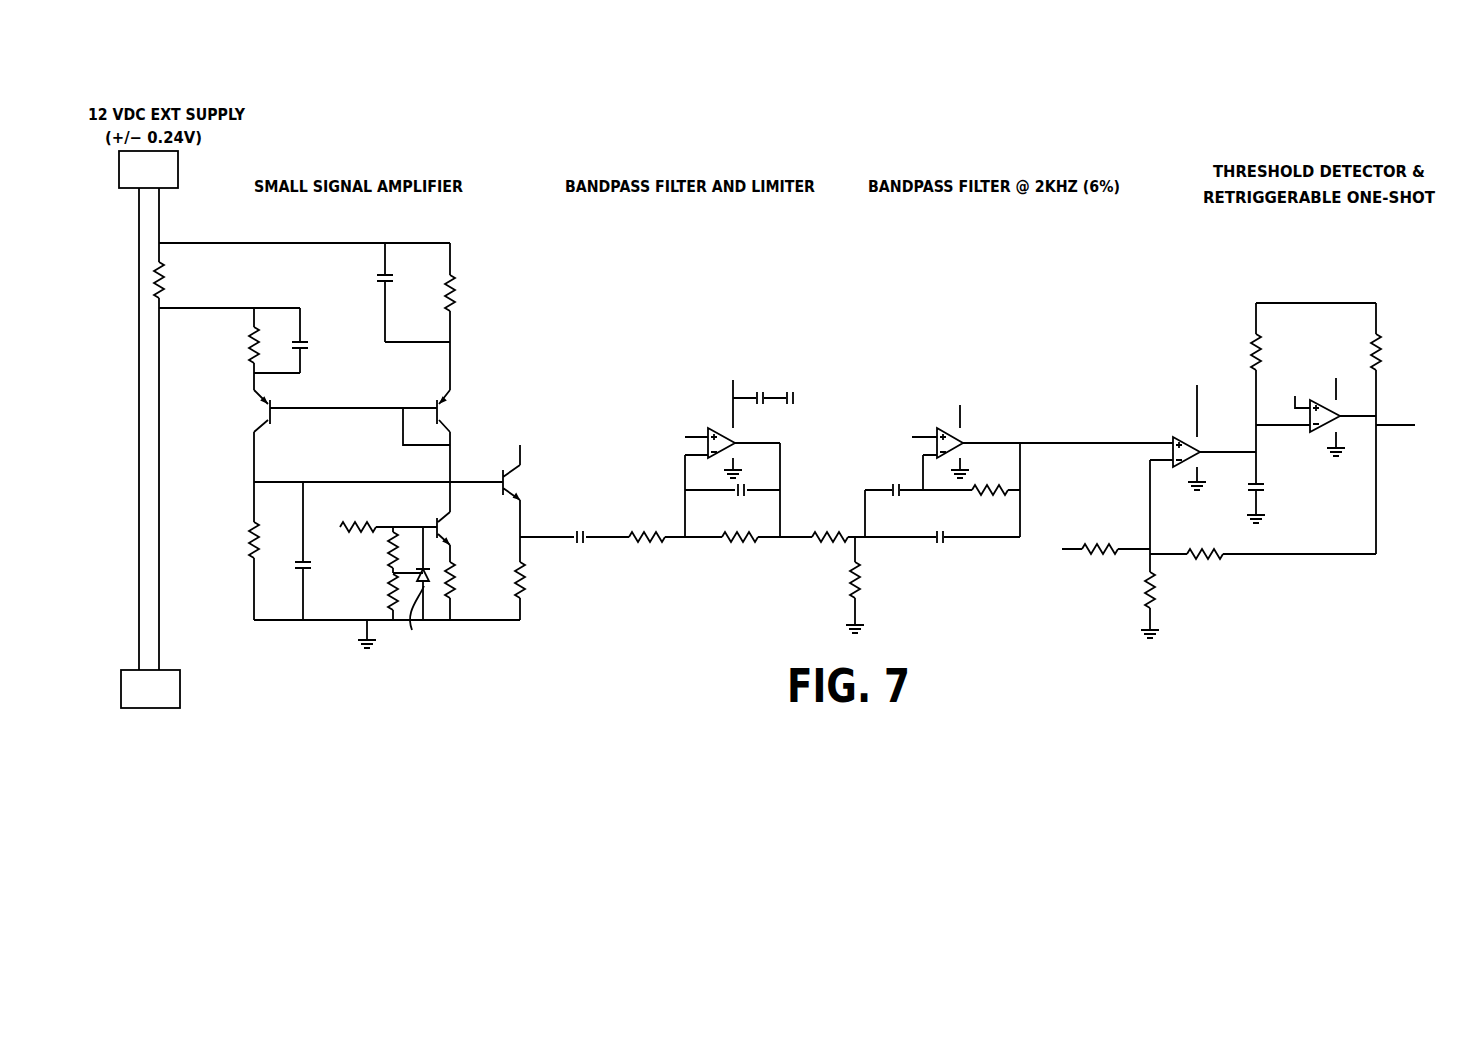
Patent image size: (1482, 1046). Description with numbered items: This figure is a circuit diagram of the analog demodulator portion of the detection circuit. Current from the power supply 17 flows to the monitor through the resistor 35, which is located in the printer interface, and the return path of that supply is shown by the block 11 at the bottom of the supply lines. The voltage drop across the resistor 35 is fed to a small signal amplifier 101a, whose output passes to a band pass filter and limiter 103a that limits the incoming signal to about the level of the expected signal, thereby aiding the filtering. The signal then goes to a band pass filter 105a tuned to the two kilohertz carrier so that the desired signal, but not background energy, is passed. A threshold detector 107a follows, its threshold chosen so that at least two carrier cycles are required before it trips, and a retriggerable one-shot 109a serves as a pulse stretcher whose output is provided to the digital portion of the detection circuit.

The power supply 17 is at (178, 169).
The power cable / external ground connection 11 is at (180, 688).
The resistor 35 is at (159, 276).
The small signal amplifier 101a is at (462, 272).
The band pass filter and limiter 103a is at (768, 386).
The band pass filter 105a is at (925, 420).
The threshold detector 107a is at (1182, 437).
The retriggerable one-shot 109a is at (1385, 378).